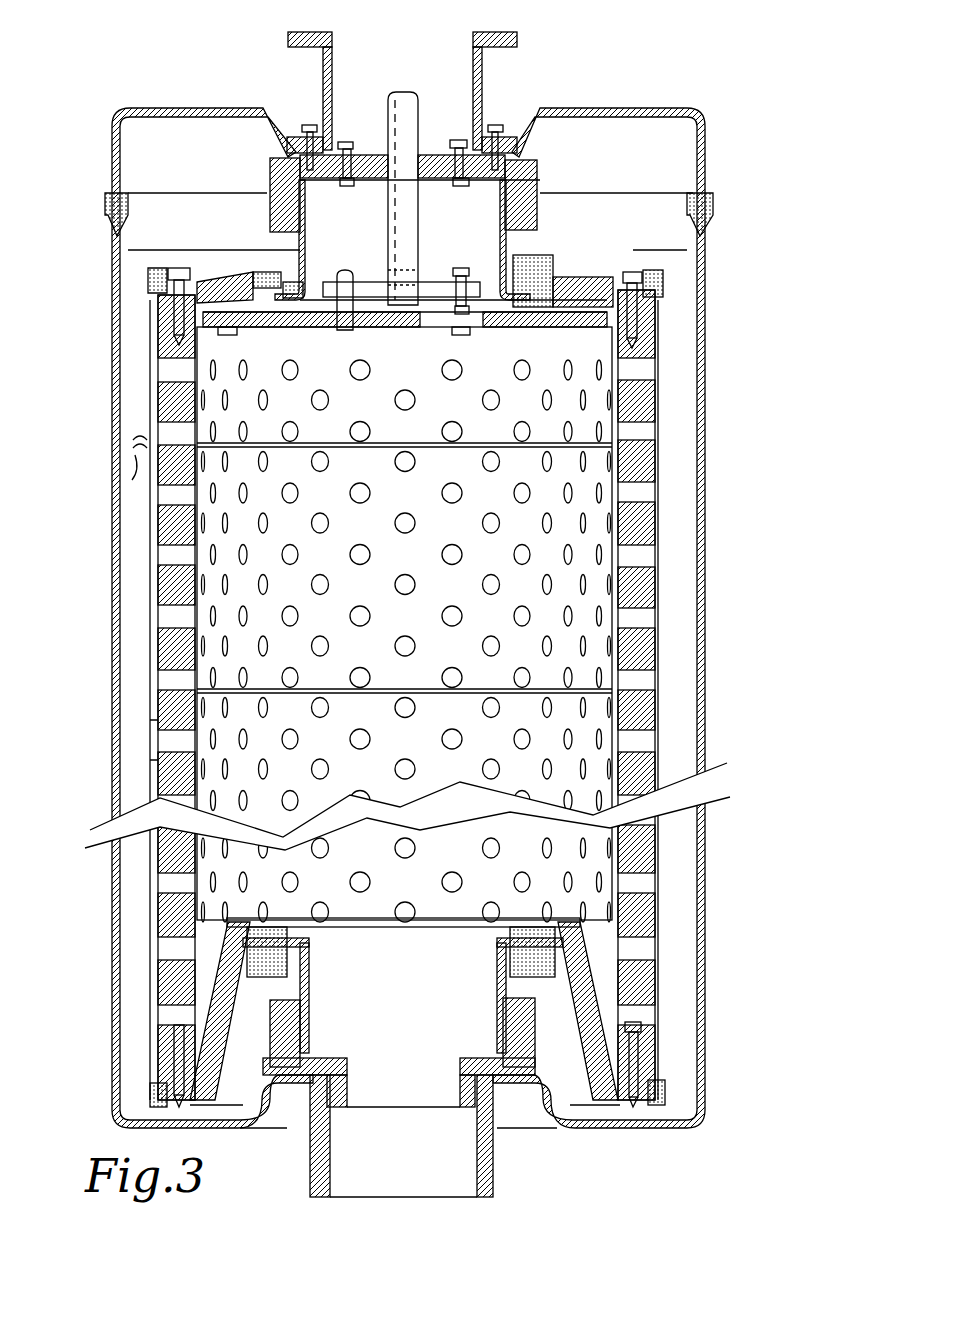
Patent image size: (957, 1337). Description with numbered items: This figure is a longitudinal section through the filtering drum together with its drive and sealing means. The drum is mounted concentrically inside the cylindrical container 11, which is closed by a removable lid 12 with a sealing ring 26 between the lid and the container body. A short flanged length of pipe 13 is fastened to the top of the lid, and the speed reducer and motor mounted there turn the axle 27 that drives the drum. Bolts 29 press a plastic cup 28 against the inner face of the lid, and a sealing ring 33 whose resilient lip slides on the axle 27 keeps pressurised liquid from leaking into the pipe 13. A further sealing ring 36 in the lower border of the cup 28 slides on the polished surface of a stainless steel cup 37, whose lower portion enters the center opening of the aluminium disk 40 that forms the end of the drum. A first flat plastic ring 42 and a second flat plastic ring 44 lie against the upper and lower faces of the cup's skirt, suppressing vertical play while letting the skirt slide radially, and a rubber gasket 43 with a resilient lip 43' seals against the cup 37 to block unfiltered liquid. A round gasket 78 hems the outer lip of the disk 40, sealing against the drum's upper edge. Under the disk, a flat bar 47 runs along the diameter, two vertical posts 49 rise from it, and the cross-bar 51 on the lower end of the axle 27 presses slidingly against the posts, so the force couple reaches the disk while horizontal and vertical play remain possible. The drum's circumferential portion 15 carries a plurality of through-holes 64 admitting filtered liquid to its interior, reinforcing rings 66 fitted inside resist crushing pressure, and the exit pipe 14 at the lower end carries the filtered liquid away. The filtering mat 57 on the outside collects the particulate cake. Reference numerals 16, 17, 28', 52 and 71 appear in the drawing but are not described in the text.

The cylindrical container 11 is at (705, 650).
The removable lid 12 is at (637, 112).
The flanged length of pipe 13 is at (482, 97).
The exit pipe 14 is at (492, 1147).
The filtering drum 15 is at (655, 465).
The filter basket wall 16 is at (660, 324).
The bolt 17 is at (660, 1053).
The sealing ring 26 is at (712, 213).
The axle 27 is at (388, 104).
The cup 28 is at (376, 184).
The lower flange 28' is at (404, 1009).
The bolts 29 is at (460, 185).
The sealing ring 33 is at (386, 162).
The sealing ring 36 is at (300, 228).
The cup 37 is at (306, 240).
The aluminium disk 40 is at (210, 282).
The first flat plastic ring 42 is at (517, 308).
The rubber gasket 43 is at (585, 272).
The resilient lip 43' is at (554, 262).
The second flat plastic ring 44 is at (267, 306).
The bar 47 is at (432, 324).
The vertical posts 49 is at (348, 322).
The cross-bar 51 is at (440, 288).
The gap 52 is at (135, 452).
The filtering mat 57 is at (152, 722).
The through-holes 64 is at (450, 522).
The reinforcing rings 66 is at (572, 447).
The outlet flange 71 is at (343, 1087).
The round gasket 78 is at (142, 298).